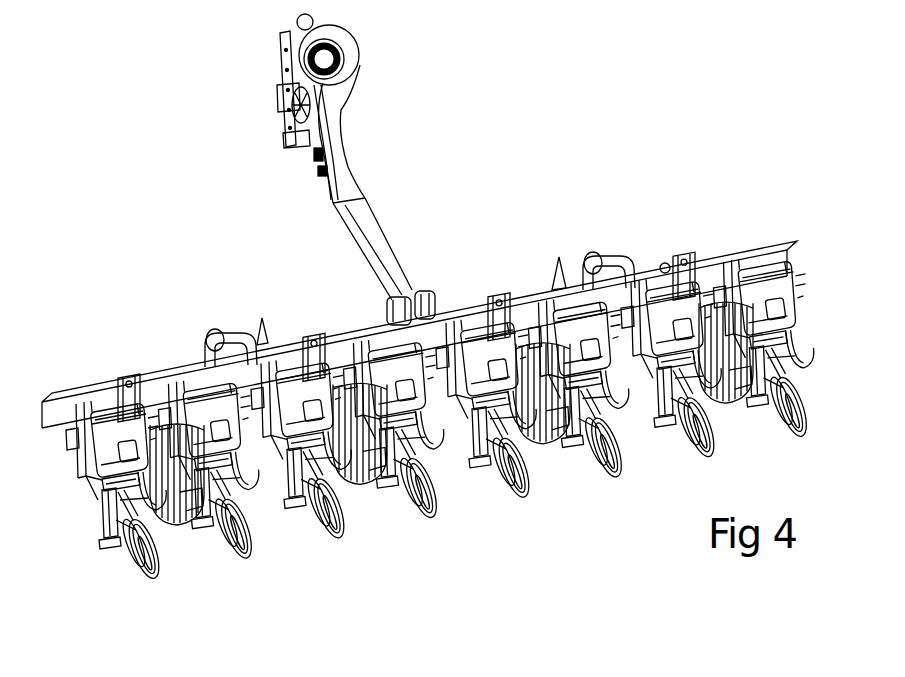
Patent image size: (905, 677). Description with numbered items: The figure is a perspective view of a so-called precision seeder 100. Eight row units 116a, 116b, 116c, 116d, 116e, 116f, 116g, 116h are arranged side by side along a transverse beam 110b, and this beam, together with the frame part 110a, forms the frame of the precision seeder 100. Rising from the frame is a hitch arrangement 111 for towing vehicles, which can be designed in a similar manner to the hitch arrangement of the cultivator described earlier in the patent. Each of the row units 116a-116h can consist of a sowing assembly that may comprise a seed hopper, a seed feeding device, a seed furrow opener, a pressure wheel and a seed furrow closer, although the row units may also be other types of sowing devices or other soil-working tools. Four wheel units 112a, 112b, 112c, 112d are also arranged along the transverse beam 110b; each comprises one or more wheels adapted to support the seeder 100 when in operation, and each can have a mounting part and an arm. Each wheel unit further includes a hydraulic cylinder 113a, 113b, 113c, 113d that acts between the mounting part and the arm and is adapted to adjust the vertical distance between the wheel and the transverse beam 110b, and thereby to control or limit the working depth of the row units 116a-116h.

The precision seeder 100 is at (184, 92).
The hitch arrangement 111 is at (278, 100).
The frame 110a is at (330, 197).
The transverse beam 110b is at (100, 393).
The wheel unit 112a is at (150, 410).
The wheel unit 112b is at (337, 363).
The wheel unit 112c is at (527, 297).
The wheel unit 112d is at (715, 257).
The hydraulic cylinder 113a is at (130, 383).
The hydraulic cylinder 113b is at (323, 353).
The hydraulic cylinder 113c is at (497, 307).
The hydraulic cylinder 113d is at (683, 270).
The row unit 116a is at (100, 500).
The row unit 116b is at (257, 527).
The row unit 116c is at (350, 507).
The row unit 116d is at (442, 490).
The row unit 116e is at (530, 473).
The row unit 116f is at (622, 460).
The row unit 116g is at (717, 447).
The row unit 116h is at (785, 447).